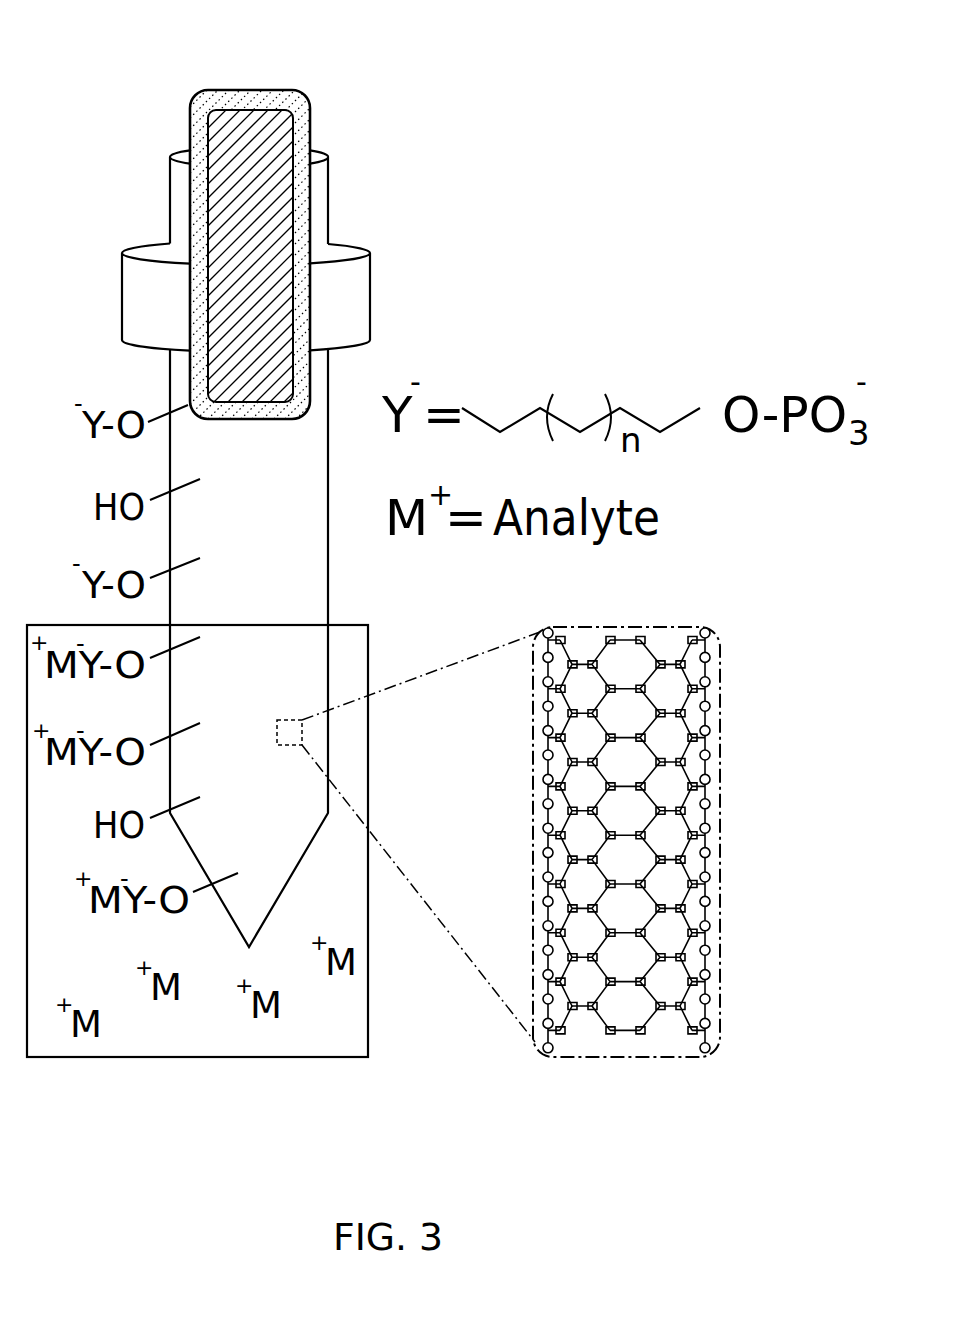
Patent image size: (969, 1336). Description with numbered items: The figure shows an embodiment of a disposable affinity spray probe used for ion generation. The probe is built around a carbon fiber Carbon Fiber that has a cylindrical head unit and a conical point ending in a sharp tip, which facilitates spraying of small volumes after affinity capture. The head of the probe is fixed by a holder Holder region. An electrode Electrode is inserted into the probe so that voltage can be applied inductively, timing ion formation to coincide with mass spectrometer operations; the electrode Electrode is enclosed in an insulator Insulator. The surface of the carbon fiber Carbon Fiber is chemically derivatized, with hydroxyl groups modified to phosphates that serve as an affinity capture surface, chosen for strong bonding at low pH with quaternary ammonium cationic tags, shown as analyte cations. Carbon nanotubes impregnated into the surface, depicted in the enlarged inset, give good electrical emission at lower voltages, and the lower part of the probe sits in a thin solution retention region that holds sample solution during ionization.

The electrode Electrode is at (232, 138).
The insulator Insulator is at (310, 125).
The carbon fiber Carbon Fiber is at (320, 202).
The holder Holder is at (353, 298).